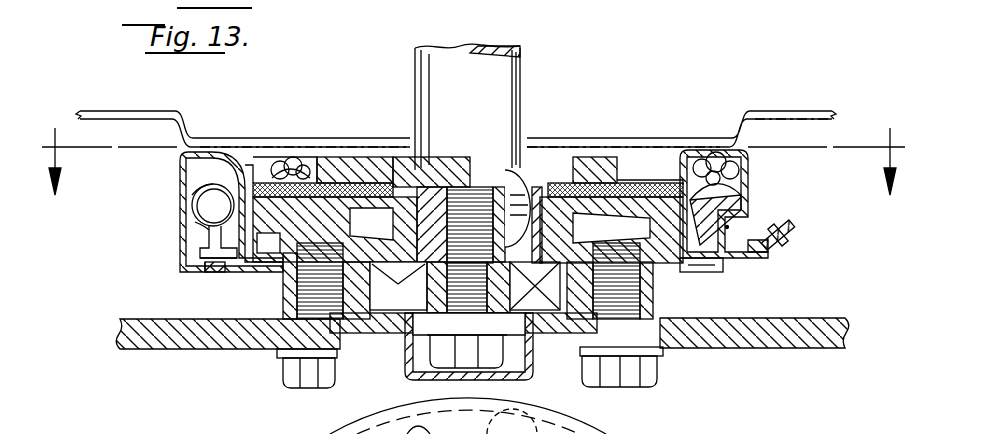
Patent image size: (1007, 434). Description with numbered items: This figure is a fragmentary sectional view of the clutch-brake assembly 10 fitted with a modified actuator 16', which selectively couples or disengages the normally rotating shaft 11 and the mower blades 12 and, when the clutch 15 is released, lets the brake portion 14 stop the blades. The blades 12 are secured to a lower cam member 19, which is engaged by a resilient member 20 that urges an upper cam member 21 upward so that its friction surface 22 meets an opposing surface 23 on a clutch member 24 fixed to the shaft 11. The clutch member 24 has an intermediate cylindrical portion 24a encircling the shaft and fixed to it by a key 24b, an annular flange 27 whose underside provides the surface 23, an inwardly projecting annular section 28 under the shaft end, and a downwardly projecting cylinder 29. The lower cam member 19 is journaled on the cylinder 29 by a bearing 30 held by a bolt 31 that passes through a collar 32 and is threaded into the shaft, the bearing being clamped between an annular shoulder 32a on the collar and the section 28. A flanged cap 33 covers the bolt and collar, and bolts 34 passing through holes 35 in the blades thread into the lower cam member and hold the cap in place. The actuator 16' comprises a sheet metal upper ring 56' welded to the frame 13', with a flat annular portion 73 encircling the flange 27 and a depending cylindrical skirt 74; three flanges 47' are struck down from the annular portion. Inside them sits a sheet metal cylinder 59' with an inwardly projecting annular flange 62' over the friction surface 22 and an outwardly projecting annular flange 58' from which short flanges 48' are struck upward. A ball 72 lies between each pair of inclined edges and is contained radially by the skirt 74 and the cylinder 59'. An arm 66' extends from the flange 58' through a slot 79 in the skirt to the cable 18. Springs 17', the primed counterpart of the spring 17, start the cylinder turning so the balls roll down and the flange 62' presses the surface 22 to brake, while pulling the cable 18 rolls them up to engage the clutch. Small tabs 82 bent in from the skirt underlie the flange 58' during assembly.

The clutch-brake assembly 10 is at (759, 92).
The shaft 11 is at (440, 50).
The blades 12 is at (150, 350).
The frame 13' is at (827, 87).
The brake portion 14 is at (692, 101).
The clutch 15 is at (563, 172).
The modified actuator 16' is at (754, 202).
The spring 17 is at (712, 174).
The springs 17' is at (258, 125).
The cable 18 is at (795, 236).
The lower cam member 19 is at (658, 287).
The resilient member 20 is at (676, 258).
The upper cam member 21 is at (302, 190).
The friction surface 22 is at (332, 150).
The opposing surface 23 is at (363, 157).
The clutch member 24 is at (393, 140).
The cylindrical portion 24a is at (408, 200).
The key 24b is at (508, 170).
The annular flange 27 is at (600, 172).
The annular section 28 is at (413, 262).
The cylinder 29 is at (438, 285).
The bearing 30 is at (545, 323).
The bolt 31 is at (505, 180).
The collar 32 is at (497, 327).
The annular shoulder 32a is at (405, 305).
The flanged cap 33 is at (528, 373).
The bolts 34 is at (298, 388).
The holes 35 is at (300, 347).
The flanges 47' is at (165, 186).
The short flanges 48' is at (168, 244).
The upper ring 56' is at (186, 209).
The annular flange 58' is at (532, 281).
The cylinder 59' is at (458, 230).
The annular flange 62' is at (629, 121).
The arm 66' is at (800, 262).
The ball 72 is at (212, 202).
The flat annular portion 73 is at (217, 152).
The cylindrical skirt 74 is at (195, 222).
The slot 79 is at (727, 227).
The tabs 82 is at (218, 265).